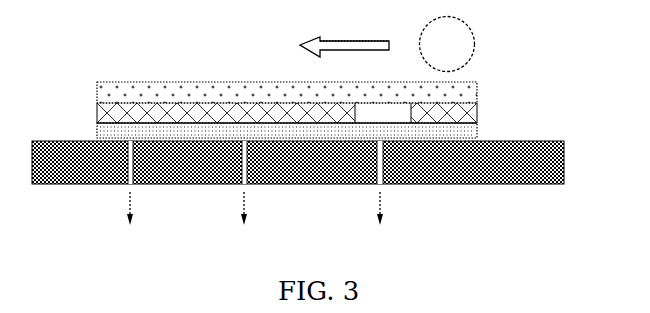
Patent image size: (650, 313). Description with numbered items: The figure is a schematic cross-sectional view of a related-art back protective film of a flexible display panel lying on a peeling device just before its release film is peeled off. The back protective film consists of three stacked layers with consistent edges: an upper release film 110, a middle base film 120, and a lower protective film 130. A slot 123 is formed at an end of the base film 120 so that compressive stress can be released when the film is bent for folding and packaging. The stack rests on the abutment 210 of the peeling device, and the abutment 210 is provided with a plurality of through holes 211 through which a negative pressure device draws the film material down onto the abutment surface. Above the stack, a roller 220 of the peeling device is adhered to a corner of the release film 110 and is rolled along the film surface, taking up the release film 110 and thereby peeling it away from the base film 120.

The release film 110 is at (479, 89).
The base film 120 is at (478, 114).
The slot 123 is at (388, 110).
The protective film 130 is at (478, 134).
The abutment 210 is at (556, 167).
The through holes 211 is at (380, 186).
The roller 220 is at (462, 38).